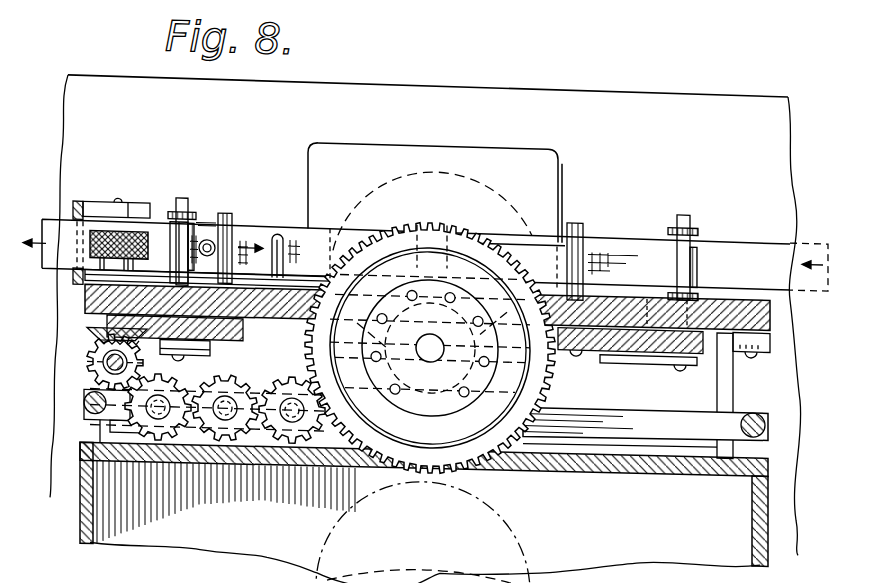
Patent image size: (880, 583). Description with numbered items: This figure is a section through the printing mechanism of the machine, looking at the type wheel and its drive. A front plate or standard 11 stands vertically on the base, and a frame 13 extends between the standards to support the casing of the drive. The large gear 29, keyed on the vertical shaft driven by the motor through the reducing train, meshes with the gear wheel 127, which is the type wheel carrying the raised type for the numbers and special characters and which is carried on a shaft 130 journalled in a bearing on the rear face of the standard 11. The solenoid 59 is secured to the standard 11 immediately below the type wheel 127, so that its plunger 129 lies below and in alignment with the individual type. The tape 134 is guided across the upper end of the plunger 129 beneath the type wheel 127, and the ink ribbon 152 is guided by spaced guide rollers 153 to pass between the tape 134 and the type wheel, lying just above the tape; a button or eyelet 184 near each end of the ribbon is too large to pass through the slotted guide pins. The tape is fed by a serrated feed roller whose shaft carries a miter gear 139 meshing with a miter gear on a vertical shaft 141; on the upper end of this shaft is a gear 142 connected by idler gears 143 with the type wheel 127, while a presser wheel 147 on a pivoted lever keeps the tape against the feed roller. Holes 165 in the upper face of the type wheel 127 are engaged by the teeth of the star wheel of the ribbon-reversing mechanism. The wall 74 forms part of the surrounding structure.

The front plate 11 is at (772, 303).
The frame 13 is at (733, 386).
The large gear 29 is at (508, 525).
The solenoid 59 is at (518, 190).
The frame wall 74 is at (768, 516).
The gear wheel 127 is at (355, 437).
The solenoid plunger 129 is at (452, 222).
The shaft 130 is at (431, 362).
The tape 134 is at (748, 242).
The miter gear 139 is at (92, 347).
The vertical shaft 141 is at (105, 369).
The gear 142 is at (90, 391).
The idler gears 143 is at (286, 393).
The presser wheel 147 is at (130, 243).
The ink ribbon 152 is at (618, 247).
The guide rollers 153 is at (193, 219).
The holes 165 is at (468, 390).
The button or eyelet 184 is at (208, 245).